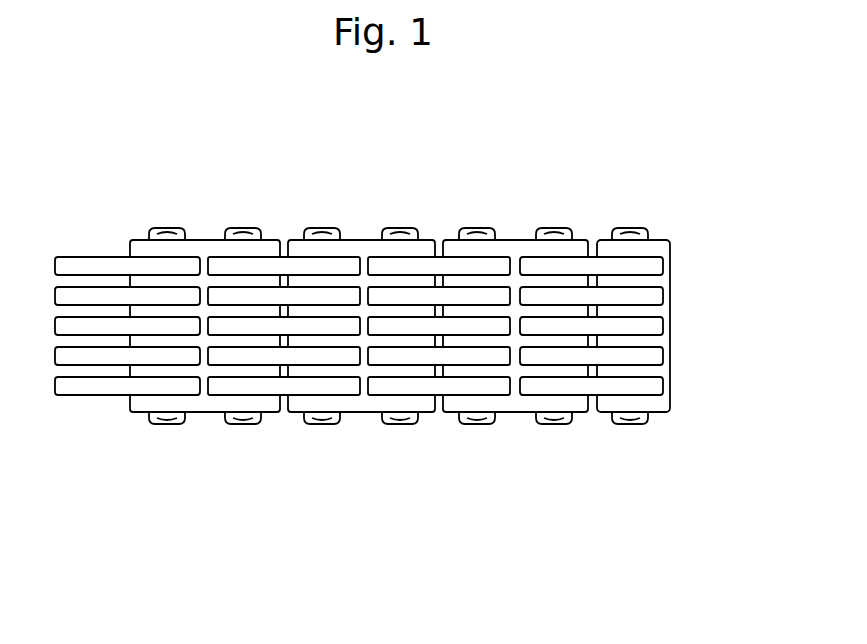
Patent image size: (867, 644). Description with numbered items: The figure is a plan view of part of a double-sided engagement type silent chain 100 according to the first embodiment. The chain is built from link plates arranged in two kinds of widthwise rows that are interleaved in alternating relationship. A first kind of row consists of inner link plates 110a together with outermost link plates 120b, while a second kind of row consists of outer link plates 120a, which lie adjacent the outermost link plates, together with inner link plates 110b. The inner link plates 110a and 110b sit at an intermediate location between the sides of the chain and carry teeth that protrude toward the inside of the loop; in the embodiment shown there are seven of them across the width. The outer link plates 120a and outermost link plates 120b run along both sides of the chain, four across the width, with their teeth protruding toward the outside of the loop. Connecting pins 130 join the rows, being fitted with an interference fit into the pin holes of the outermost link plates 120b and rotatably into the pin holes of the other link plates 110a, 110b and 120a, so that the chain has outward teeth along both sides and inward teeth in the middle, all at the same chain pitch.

The chain 100 is at (586, 205).
The inner link plate 110a is at (220, 283).
The inner link plate 110b is at (312, 325).
The outer link plate 120a is at (342, 270).
The outermost link plate 120b is at (420, 248).
The connecting pin 130 is at (553, 230).